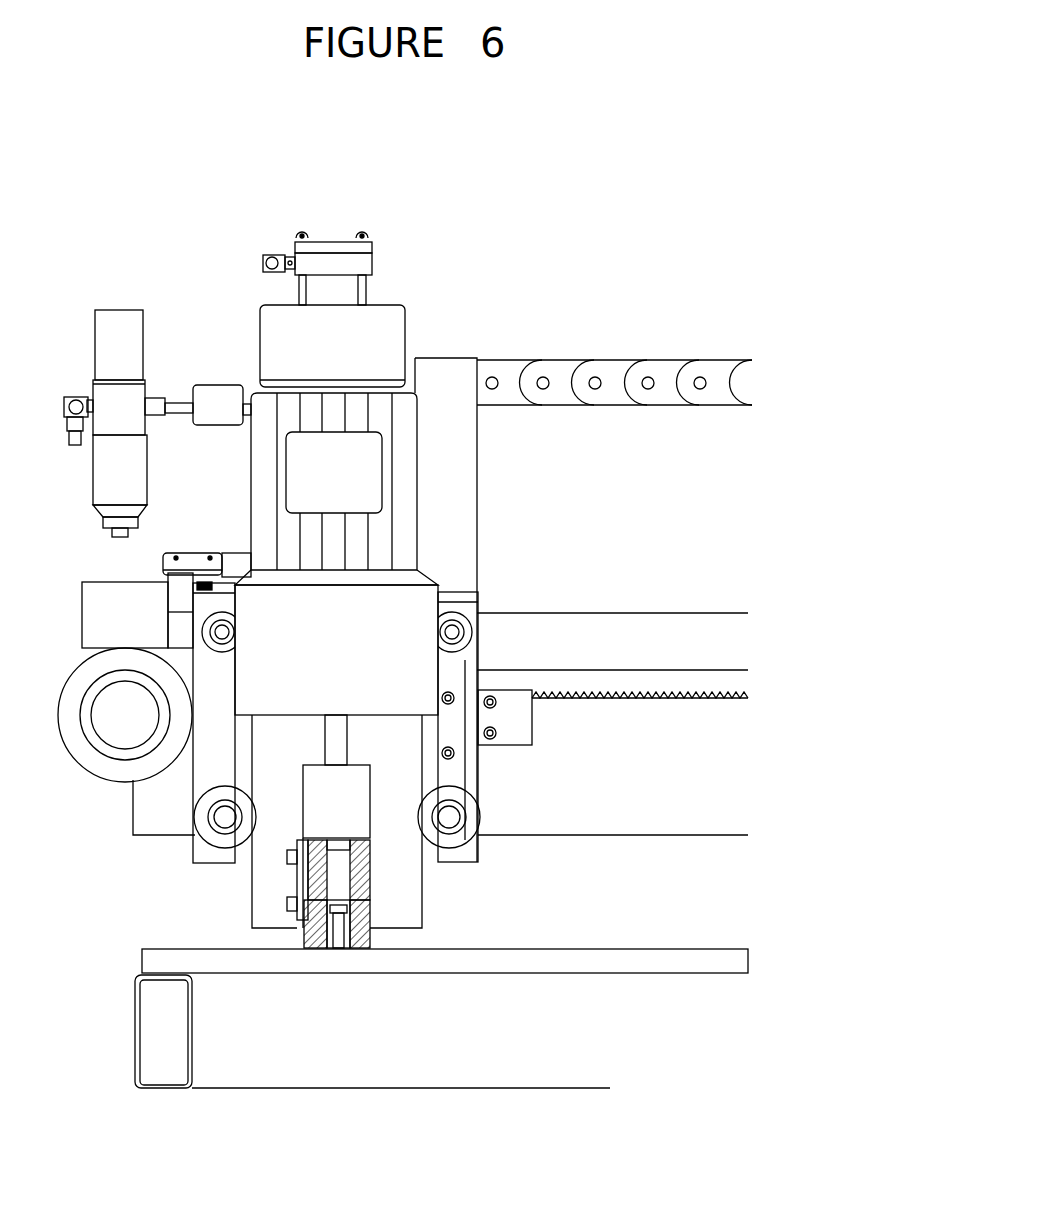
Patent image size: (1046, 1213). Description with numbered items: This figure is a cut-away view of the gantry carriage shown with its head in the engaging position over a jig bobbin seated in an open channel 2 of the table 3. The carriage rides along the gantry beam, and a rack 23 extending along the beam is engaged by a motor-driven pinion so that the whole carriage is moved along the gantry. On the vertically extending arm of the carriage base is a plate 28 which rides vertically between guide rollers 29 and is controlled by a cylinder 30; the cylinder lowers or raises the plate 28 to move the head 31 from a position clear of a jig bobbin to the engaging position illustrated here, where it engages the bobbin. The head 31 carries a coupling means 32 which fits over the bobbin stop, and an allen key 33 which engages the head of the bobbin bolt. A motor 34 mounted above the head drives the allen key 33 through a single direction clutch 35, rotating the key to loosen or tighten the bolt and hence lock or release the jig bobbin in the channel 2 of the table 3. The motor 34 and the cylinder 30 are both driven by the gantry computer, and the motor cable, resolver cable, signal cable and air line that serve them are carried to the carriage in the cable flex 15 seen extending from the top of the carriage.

The open channel 2 is at (637, 960).
The table 3 is at (577, 1043).
The cable flex 15 is at (575, 360).
The rack 23 is at (713, 680).
The plate 28 is at (267, 912).
The guide rollers 29 is at (467, 630).
The cylinder 30 is at (325, 247).
The head 31 is at (377, 779).
The coupling means 32 is at (372, 868).
The allen key 33 is at (340, 935).
The motor 34 is at (400, 543).
The single direction clutch 35 is at (340, 797).